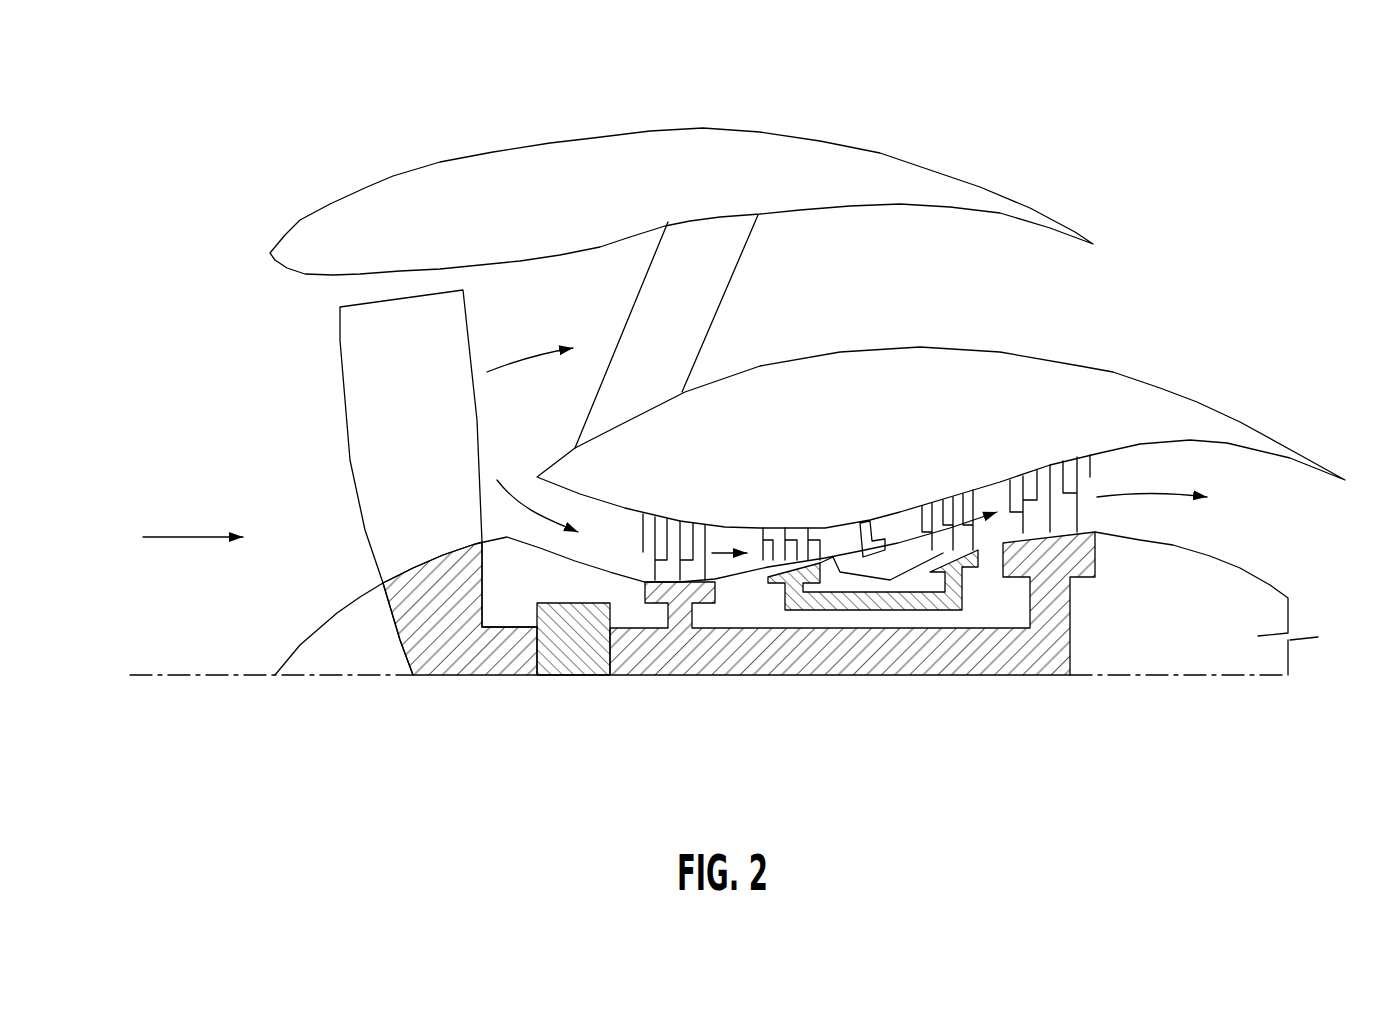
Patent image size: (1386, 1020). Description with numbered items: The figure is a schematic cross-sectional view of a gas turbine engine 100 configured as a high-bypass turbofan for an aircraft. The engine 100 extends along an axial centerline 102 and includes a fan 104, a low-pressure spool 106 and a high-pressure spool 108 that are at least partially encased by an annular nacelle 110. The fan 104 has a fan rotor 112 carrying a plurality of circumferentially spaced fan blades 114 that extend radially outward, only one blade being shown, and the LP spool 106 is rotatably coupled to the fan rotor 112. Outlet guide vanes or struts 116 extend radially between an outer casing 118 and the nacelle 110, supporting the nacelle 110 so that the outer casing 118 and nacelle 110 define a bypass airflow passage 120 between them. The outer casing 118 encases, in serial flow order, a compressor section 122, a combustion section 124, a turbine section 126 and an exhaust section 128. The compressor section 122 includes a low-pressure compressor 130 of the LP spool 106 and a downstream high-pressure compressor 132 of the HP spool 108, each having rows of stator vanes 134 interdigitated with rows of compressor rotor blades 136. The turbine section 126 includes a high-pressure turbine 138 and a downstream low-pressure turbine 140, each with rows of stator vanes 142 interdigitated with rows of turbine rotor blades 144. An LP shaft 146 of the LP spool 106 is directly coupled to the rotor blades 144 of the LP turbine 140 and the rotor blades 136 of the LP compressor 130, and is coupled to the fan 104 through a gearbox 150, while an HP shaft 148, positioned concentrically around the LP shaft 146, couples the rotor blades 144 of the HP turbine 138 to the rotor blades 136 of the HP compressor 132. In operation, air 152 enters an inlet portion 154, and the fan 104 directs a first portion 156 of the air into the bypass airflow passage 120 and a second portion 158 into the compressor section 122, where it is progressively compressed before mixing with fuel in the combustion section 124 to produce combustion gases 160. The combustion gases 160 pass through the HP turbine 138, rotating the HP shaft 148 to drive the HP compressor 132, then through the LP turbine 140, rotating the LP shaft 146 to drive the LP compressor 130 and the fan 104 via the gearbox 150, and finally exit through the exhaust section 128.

The gas turbine engine 100 is at (298, 103).
The axial centerline 102 is at (1158, 677).
The fan 104 is at (320, 368).
The low-pressure spool 106 is at (672, 693).
The high-pressure spool 108 is at (945, 623).
The nacelle 110 is at (395, 178).
The fan rotor 112 is at (340, 613).
The fan blades 114 is at (350, 460).
The outlet guide vanes or struts 116 is at (638, 295).
The outer casing 118 is at (1000, 350).
The bypass airflow passage 120 is at (922, 288).
The compressor section 122 is at (740, 488).
The combustion section 124 is at (868, 497).
The turbine section 126 is at (967, 455).
The exhaust section 128 is at (1280, 522).
The low-pressure compressor 130 is at (667, 497).
The high-pressure compressor 132 is at (785, 497).
The stator vanes 134 is at (642, 514).
The compressor rotor blades 136 is at (705, 550).
The high-pressure turbine 138 is at (930, 483).
The low-pressure turbine 140 is at (1050, 437).
The stator vanes 142 is at (920, 527).
The turbine rotor blades 144 is at (1078, 502).
The low-pressure shaft 146 is at (785, 665).
The high-pressure shaft 148 is at (930, 610).
The gearbox 150 is at (582, 665).
The air 152 is at (190, 537).
The inlet portion 154 is at (270, 292).
The first portion of the air 156 is at (537, 358).
The second portion of the air 158 is at (512, 490).
The combustion gases 160 is at (982, 512).